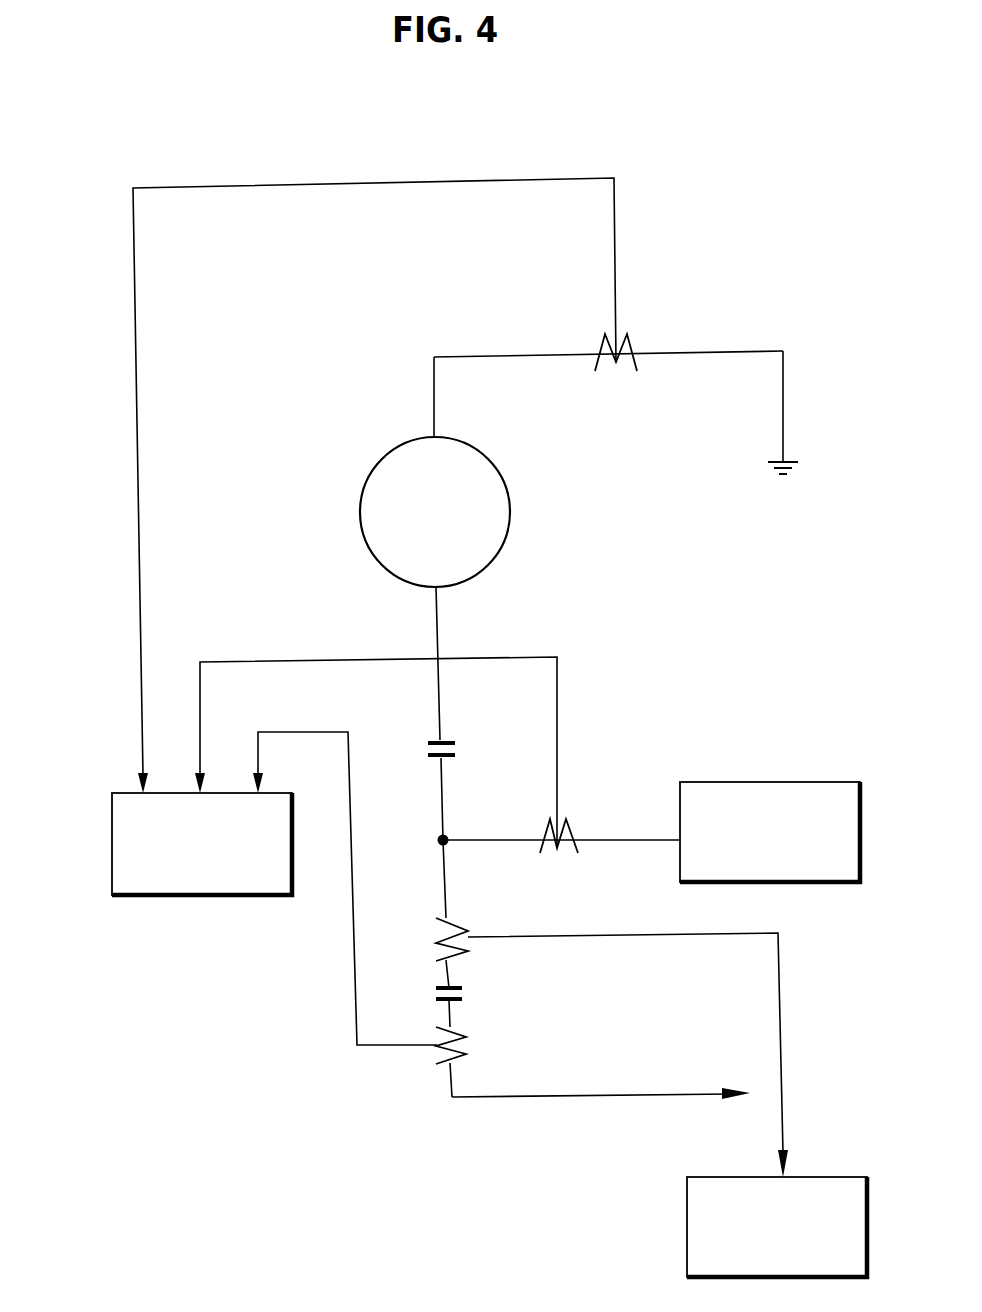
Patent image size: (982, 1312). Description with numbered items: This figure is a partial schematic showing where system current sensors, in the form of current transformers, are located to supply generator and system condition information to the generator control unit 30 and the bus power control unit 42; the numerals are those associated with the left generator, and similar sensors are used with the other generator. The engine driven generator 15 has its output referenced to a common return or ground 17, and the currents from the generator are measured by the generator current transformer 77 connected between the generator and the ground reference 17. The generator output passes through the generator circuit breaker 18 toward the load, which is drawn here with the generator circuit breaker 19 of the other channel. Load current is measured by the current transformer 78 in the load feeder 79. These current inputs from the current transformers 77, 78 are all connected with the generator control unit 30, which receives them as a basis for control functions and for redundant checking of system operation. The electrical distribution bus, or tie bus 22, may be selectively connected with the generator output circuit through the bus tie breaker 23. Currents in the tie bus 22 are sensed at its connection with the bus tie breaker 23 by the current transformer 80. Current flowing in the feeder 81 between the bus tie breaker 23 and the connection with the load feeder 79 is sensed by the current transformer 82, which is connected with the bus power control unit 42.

The engine driven generator 15 is at (493, 483).
The ground 17 is at (783, 417).
The generator current transformer 77 is at (630, 338).
The generator circuit breaker 18 is at (452, 757).
The generator circuit breaker 19 is at (720, 797).
The current transformer 78 is at (568, 825).
The load feeder 79 is at (610, 840).
The generator control unit 30 is at (143, 882).
The feeder 81 is at (444, 888).
The current transformer 82 is at (462, 898).
The bus tie breaker 23 is at (455, 1001).
The current transformer 80 is at (448, 1063).
The electrical distribution bus 22 is at (573, 1095).
The bus power control unit 42 is at (697, 1215).